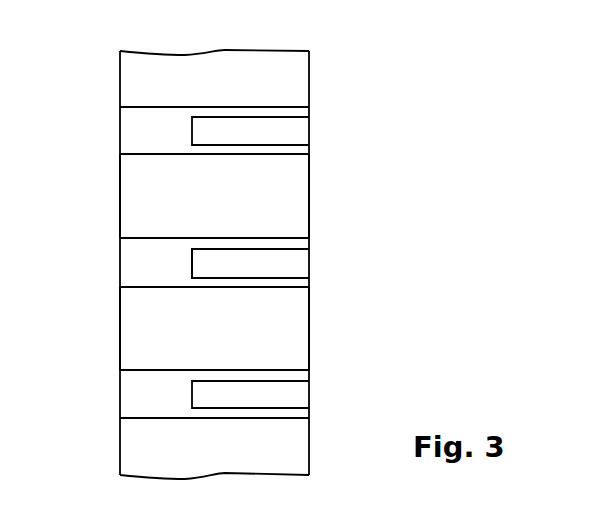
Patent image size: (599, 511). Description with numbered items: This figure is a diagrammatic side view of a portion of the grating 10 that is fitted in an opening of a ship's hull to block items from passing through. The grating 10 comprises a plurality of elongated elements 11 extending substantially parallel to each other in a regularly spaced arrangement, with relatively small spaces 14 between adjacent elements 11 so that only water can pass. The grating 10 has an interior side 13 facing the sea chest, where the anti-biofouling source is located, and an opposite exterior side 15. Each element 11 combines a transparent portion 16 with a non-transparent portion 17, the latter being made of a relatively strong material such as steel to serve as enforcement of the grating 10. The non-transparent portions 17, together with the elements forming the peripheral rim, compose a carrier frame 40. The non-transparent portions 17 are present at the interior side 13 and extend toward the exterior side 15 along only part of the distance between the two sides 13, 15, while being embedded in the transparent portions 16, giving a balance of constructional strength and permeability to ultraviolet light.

The grating 10 is at (284, 81).
The elements 11 is at (140, 143).
The interior side 13 is at (309, 203).
The spaces 14 is at (288, 177).
The exterior side 15 is at (120, 200).
The transparent portion 16 is at (133, 128).
The non-transparent portion 17 is at (286, 132).
The carrier frame 40 is at (292, 267).